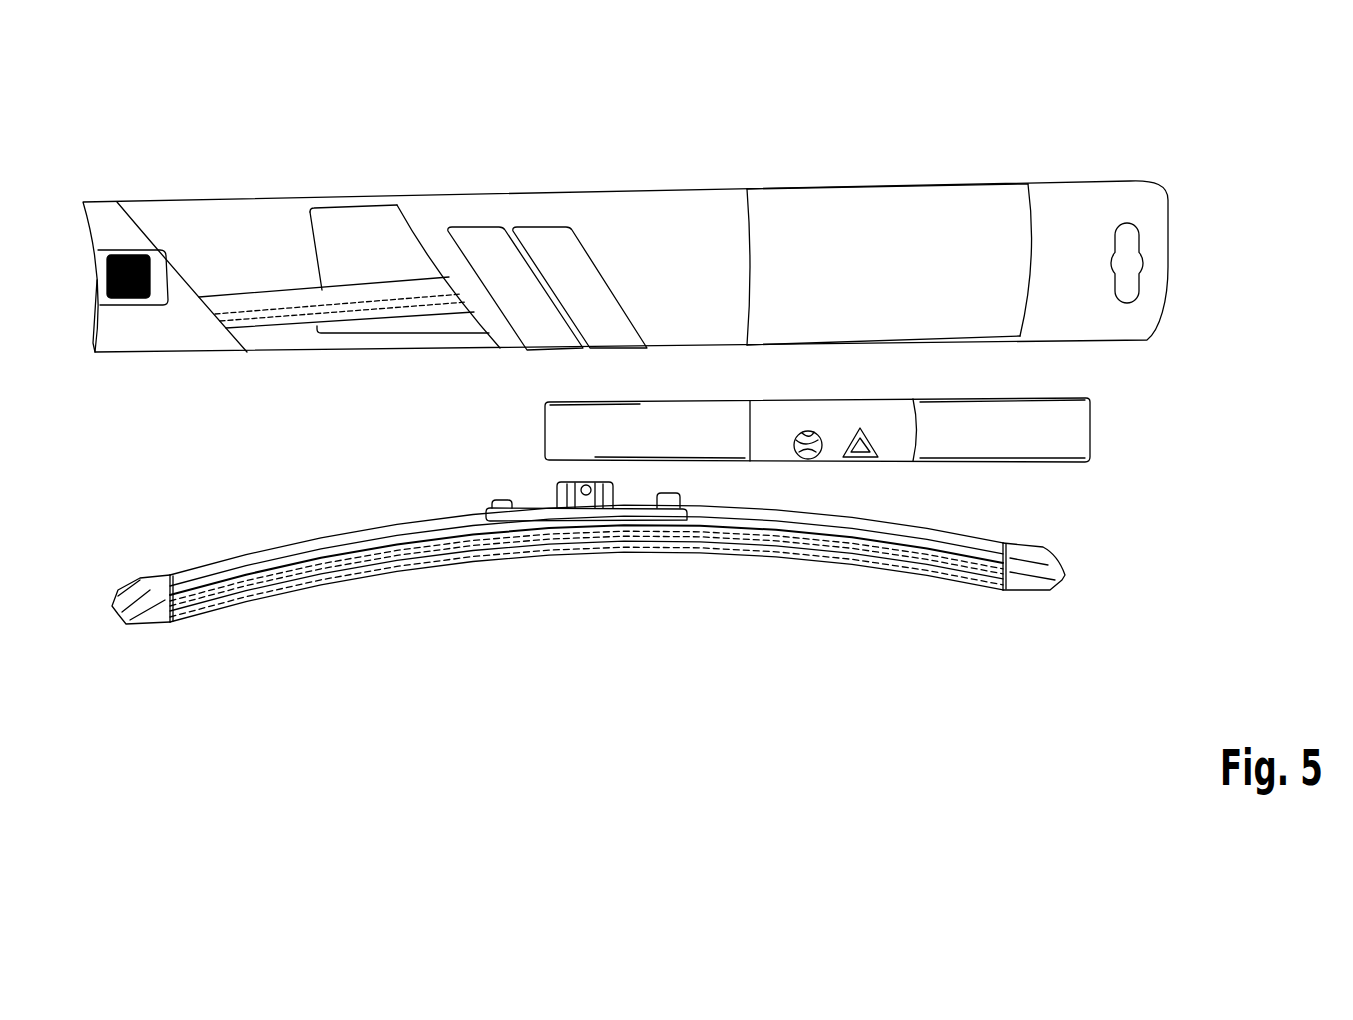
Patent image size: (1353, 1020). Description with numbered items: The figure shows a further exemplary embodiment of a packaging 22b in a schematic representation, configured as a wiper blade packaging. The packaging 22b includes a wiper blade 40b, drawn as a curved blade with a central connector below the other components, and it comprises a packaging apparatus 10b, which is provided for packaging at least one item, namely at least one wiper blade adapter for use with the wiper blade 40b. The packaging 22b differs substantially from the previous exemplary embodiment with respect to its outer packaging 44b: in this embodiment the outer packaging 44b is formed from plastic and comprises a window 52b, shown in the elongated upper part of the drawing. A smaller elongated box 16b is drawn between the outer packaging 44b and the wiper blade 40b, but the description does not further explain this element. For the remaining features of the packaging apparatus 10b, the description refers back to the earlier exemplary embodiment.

The packaging apparatus 10b is at (687, 348).
The packaging 22b is at (680, 236).
The outer packaging 44b is at (906, 218).
The window 52b is at (226, 218).
The insert box / secondary packaging 16b is at (1080, 448).
The wiper blade 40b is at (295, 557).